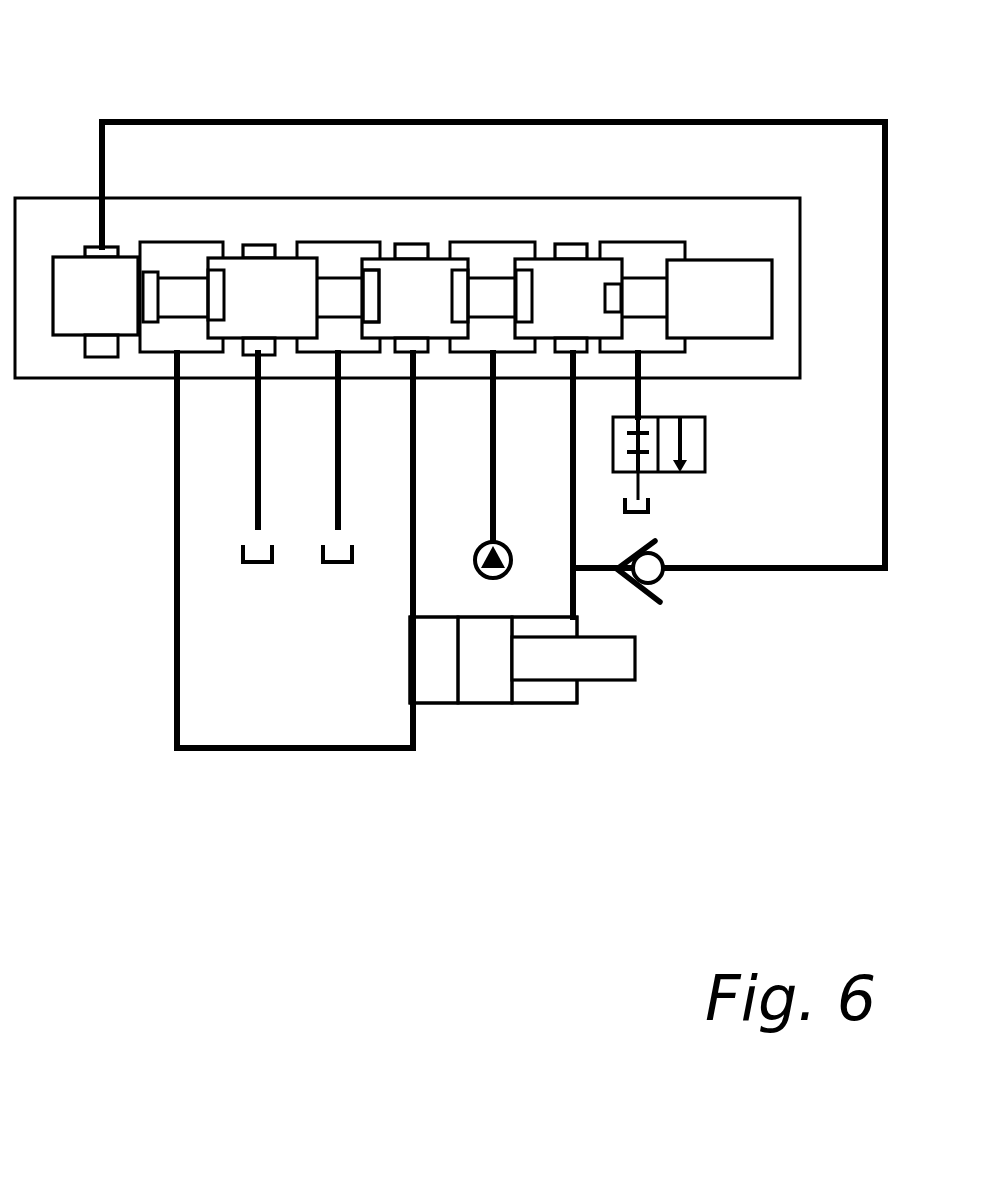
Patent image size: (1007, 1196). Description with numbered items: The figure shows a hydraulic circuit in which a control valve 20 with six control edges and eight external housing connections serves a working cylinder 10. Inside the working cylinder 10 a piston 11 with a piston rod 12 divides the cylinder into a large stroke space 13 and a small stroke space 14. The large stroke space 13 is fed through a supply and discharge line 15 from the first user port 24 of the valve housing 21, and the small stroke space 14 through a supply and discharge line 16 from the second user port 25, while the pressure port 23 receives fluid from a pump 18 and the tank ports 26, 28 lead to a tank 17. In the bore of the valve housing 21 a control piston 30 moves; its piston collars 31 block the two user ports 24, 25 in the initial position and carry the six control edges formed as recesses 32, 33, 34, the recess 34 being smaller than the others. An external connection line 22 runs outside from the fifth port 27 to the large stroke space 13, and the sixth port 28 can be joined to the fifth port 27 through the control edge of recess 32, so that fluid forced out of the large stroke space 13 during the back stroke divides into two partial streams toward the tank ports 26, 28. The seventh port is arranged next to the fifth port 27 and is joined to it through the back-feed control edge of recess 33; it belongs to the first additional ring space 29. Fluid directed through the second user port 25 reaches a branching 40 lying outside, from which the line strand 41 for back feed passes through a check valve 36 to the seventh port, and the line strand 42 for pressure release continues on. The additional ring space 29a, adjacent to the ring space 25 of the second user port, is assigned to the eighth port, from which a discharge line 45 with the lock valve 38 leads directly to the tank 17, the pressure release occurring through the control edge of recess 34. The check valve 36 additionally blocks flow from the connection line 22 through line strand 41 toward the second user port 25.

The working cylinder 10 is at (556, 718).
The piston 11 is at (475, 690).
The piston rod 12 is at (637, 657).
The large stroke space 13 is at (432, 687).
The small stroke space 14 is at (550, 688).
The supply and discharge line 15 is at (408, 558).
The supply and discharge line 16 is at (573, 597).
The tank 17 is at (243, 566).
The pump 18 is at (473, 560).
The control valve 20 is at (582, 184).
The valve housing 21 is at (513, 197).
The external connection line 22 is at (177, 562).
The pressure port P 23 is at (503, 343).
The port A1 24 is at (418, 343).
The ring space 25 is at (570, 347).
The tank port T1 26 is at (348, 343).
The port A2 27 is at (187, 343).
The tank port T2 28 is at (267, 347).
The first additional ring space 29 is at (97, 348).
The additional ring space 29a is at (665, 345).
The control piston 30 is at (184, 285).
The piston collar 31 is at (82, 272).
The recess 32 is at (373, 296).
The recess 33 is at (150, 285).
The recess 34 is at (612, 296).
The check valve 36 is at (663, 582).
The lock valve 38 is at (705, 455).
The branching 40 is at (578, 575).
The line strand 41 is at (837, 572).
The line strand 42 is at (573, 513).
The discharge line 45 is at (645, 412).